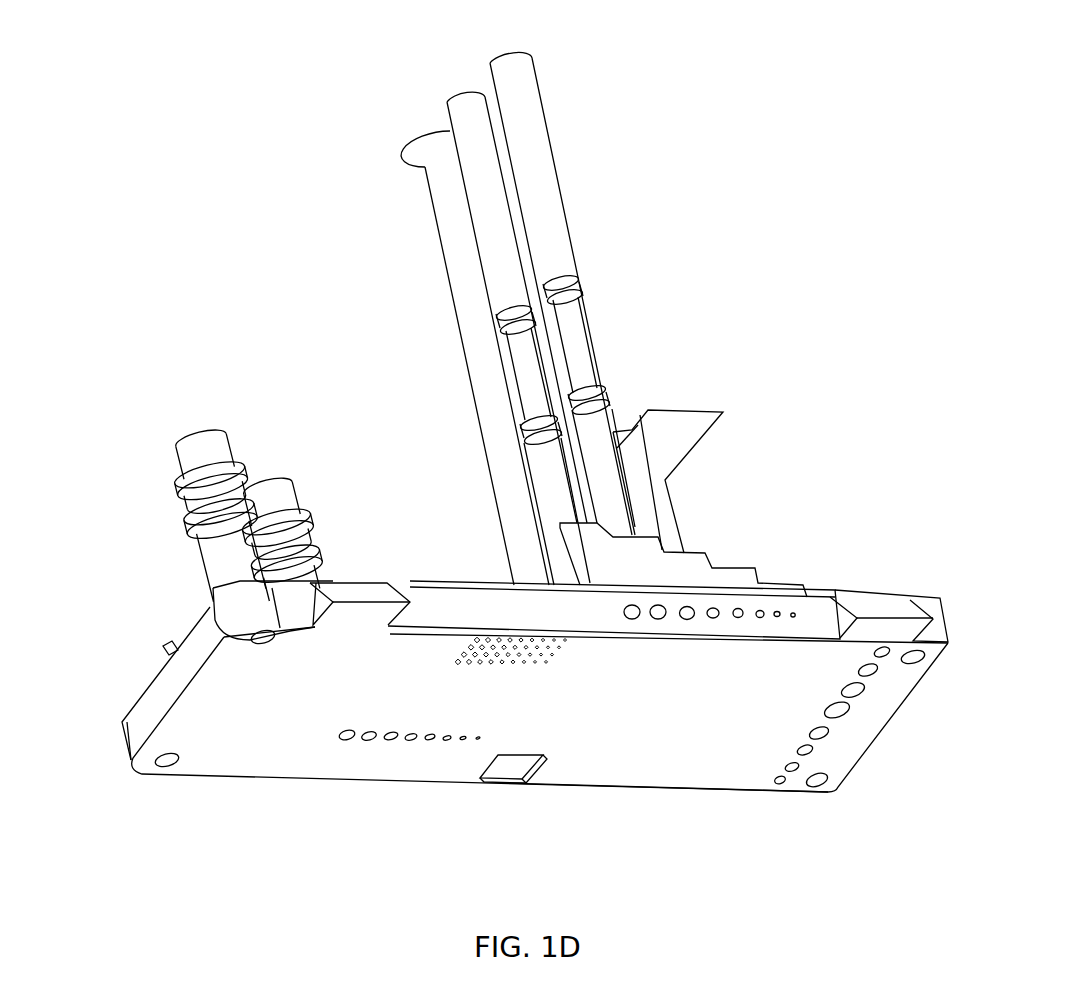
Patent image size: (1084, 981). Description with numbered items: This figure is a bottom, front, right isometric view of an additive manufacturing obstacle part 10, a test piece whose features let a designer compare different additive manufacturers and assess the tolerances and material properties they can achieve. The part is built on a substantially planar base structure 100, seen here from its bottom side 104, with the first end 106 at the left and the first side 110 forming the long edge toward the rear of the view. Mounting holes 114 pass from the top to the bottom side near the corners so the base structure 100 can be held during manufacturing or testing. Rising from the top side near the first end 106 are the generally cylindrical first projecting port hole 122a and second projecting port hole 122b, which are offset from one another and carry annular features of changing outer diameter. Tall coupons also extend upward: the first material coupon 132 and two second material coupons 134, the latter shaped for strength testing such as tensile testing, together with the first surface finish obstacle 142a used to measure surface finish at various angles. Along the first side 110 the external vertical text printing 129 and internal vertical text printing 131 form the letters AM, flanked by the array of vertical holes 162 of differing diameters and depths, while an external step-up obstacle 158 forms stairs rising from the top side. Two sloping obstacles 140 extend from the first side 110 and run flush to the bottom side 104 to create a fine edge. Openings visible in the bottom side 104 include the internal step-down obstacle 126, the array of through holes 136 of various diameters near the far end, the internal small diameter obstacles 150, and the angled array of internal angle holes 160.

The additive manufacturing obstacle part 10 is at (257, 289).
The base structure 100 is at (633, 767).
The bottom side 104 is at (570, 767).
The first end 106 is at (153, 694).
The first side 110 is at (614, 616).
The mounting holes 114 is at (230, 641).
The first projecting port hole 122a is at (187, 453).
The second projecting port hole 122b is at (285, 499).
The internal step-down obstacle 126 is at (517, 782).
The external vertical text printing 129 is at (610, 625).
The internal vertical text printing 131 is at (483, 617).
The first material coupon 132 is at (437, 162).
The second material coupons 134 is at (530, 112).
The array of through holes 136 is at (843, 717).
The sloping obstacles 140 is at (361, 592).
The first surface finish obstacle 142a is at (672, 418).
The internal small diameter obstacles 150 is at (537, 650).
The external step-up obstacle 158 is at (685, 558).
The internal angle holes 160 is at (396, 746).
The array of vertical holes 162 is at (690, 618).